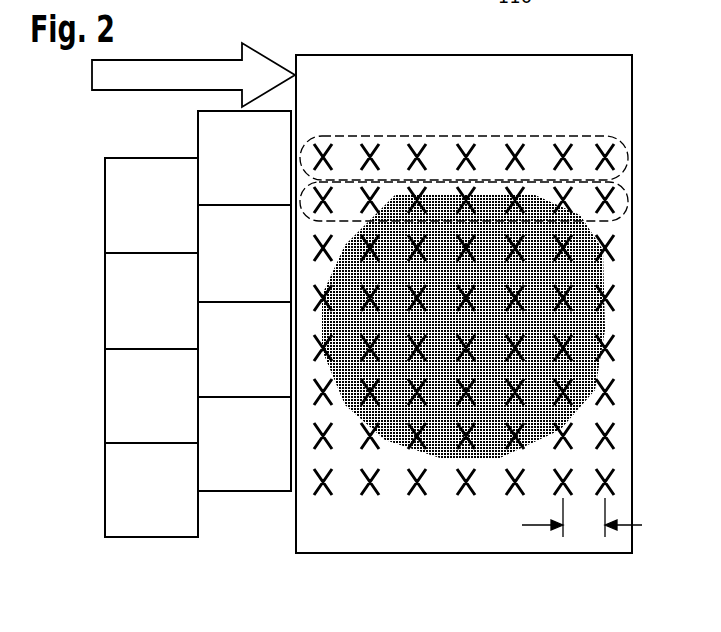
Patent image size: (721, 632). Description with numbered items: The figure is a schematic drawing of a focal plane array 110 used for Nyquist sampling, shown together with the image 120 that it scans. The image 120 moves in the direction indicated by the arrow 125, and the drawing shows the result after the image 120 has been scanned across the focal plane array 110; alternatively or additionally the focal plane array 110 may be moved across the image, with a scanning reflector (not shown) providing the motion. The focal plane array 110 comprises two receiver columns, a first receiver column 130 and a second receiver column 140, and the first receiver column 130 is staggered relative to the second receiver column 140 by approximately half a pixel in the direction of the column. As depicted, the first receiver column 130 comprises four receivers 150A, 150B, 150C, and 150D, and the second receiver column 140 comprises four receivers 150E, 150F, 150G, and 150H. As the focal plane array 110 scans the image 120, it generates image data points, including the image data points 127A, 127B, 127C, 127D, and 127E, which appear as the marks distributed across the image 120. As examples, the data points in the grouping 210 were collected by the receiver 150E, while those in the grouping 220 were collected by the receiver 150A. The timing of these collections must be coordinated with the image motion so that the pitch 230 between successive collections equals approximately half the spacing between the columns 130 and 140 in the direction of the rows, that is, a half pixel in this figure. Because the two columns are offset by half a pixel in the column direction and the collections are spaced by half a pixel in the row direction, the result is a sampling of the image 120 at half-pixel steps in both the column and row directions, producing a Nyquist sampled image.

The focal plane array 110 is at (198, 360).
The image 120 is at (479, 318).
The arrow 125 is at (157, 60).
The image data point 127A is at (323, 143).
The image data point 127B is at (515, 143).
The image data point 127C is at (475, 302).
The image data point 127D is at (412, 438).
The image data point 127E is at (523, 437).
The first receiver column 130 is at (151, 367).
The second receiver column 140 is at (244, 322).
The receiver 150A is at (134, 226).
The receiver 150B is at (131, 322).
The receiver 150C is at (131, 412).
The receiver 150D is at (131, 504).
The receiver 150E is at (227, 174).
The receiver 150F is at (227, 266).
The receiver 150G is at (226, 354).
The receiver 150H is at (224, 461).
The grouping 210 is at (614, 137).
The grouping 220 is at (613, 220).
The pitch 230 is at (616, 524).